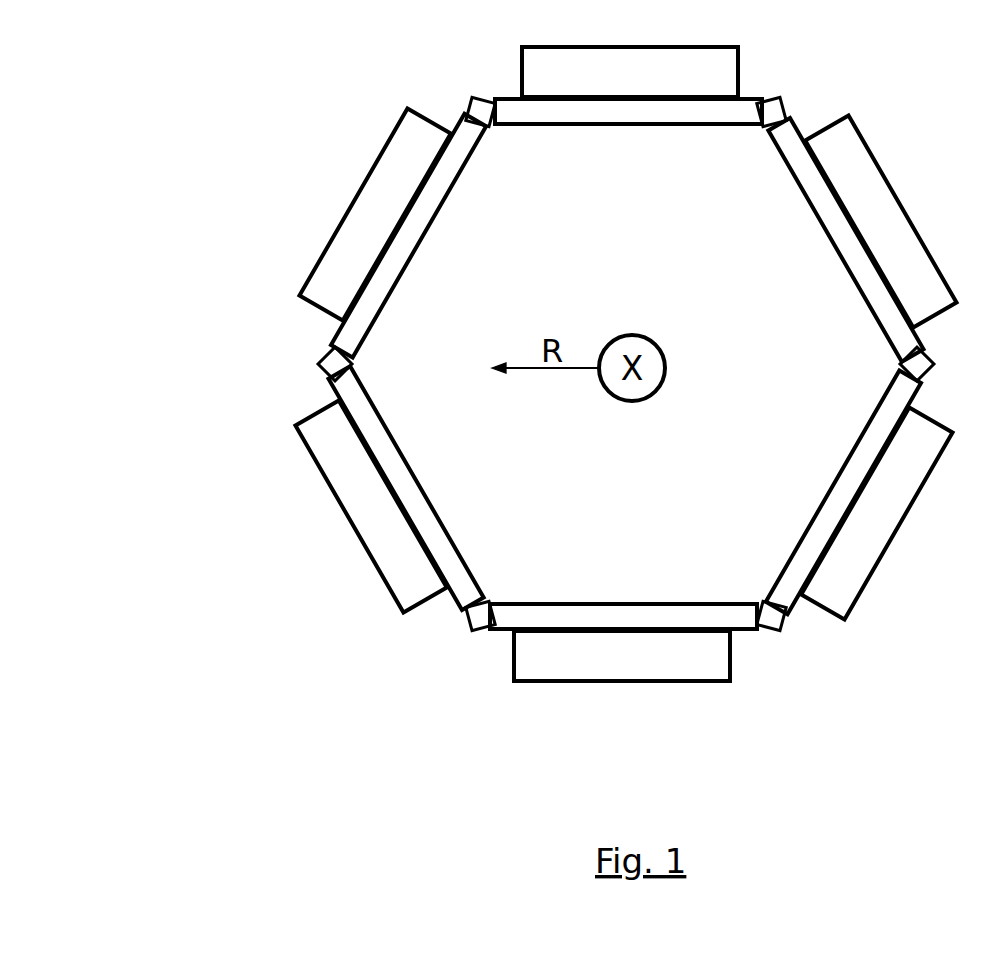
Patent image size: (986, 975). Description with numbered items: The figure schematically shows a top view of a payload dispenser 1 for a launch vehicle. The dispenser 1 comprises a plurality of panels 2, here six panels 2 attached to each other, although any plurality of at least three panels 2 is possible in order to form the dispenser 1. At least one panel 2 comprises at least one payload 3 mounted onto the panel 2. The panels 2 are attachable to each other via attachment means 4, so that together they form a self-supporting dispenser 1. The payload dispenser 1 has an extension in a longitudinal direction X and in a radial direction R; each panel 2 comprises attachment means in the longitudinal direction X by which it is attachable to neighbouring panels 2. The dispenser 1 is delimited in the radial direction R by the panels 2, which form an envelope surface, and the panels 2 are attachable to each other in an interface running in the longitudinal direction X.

The payload dispenser 1 is at (187, 113).
The panel 2 is at (424, 549).
The payload 3 is at (344, 495).
The attachment means 4 is at (304, 362).